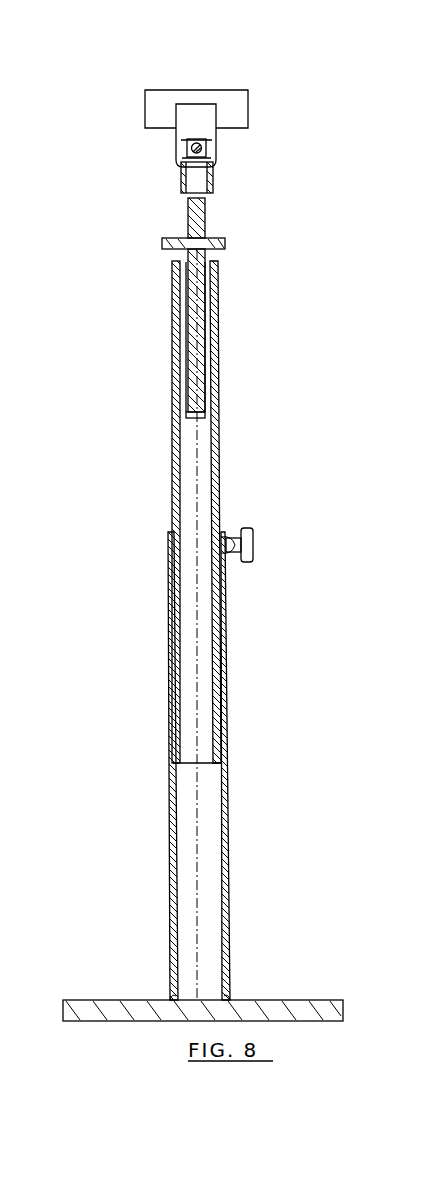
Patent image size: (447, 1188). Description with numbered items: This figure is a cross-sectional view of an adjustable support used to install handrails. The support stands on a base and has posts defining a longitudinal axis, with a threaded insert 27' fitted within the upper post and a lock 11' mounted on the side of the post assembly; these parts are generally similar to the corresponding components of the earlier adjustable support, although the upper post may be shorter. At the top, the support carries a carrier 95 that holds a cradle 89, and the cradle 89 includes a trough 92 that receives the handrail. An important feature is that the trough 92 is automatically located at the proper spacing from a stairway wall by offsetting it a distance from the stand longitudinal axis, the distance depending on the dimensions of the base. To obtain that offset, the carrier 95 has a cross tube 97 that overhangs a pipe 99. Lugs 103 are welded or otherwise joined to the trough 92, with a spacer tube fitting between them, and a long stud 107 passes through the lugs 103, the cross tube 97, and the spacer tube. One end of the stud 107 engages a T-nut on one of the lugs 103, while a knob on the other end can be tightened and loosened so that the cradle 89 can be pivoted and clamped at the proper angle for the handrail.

The carrier 95 is at (187, 129).
The trough 92 is at (157, 112).
The cradle 89 is at (187, 114).
The lugs 103 is at (194, 114).
The cross tube 97 is at (183, 146).
The stud 107 is at (203, 146).
The pipe 99 is at (197, 175).
The threaded insert 27' is at (236, 308).
The lock 11' is at (279, 526).